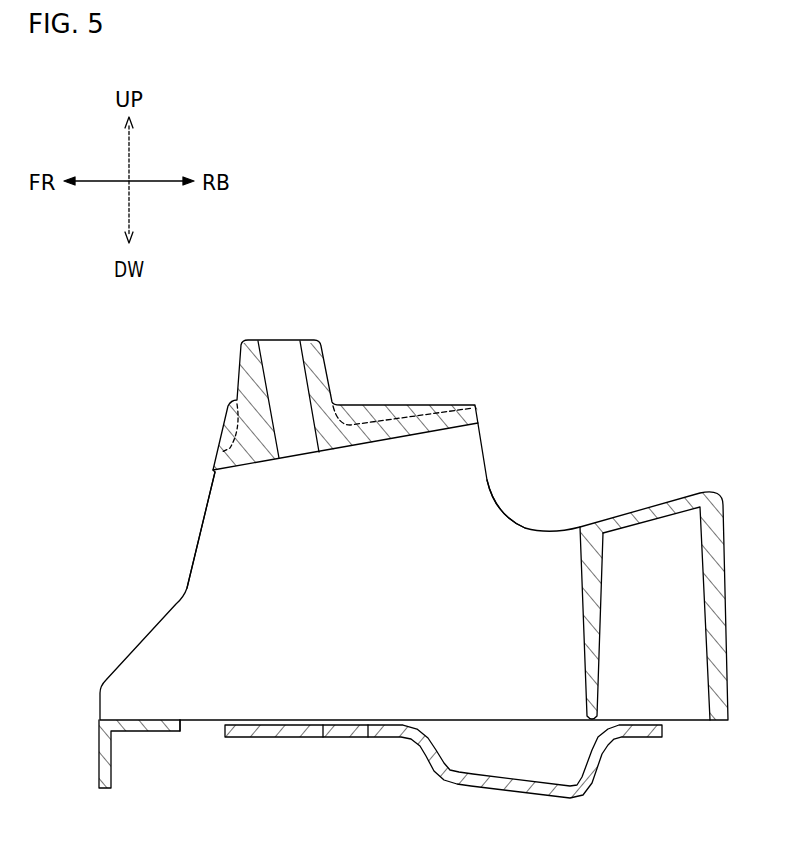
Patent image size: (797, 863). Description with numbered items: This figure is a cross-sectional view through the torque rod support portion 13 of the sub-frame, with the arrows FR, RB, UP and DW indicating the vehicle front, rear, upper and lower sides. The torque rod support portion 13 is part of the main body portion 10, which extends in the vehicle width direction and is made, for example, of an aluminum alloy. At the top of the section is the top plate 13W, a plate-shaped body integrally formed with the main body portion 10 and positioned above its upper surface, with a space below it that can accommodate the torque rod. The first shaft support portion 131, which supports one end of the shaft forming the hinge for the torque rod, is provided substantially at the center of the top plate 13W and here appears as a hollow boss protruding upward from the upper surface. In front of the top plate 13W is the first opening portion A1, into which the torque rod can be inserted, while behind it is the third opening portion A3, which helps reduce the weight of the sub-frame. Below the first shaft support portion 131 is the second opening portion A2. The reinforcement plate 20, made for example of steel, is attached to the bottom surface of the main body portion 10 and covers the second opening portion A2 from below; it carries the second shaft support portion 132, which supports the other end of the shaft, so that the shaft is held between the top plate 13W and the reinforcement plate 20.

The torque rod support portion 13 is at (200, 343).
The first shaft support portion 131 is at (327, 365).
The top plate 13W is at (388, 418).
The second shaft support portion 132 is at (327, 728).
The main body portion 10 is at (98, 767).
The reinforcement plate 20 is at (487, 789).
The first opening portion A1 is at (198, 538).
The second opening portion A2 is at (180, 722).
The third opening portion A3 is at (488, 461).